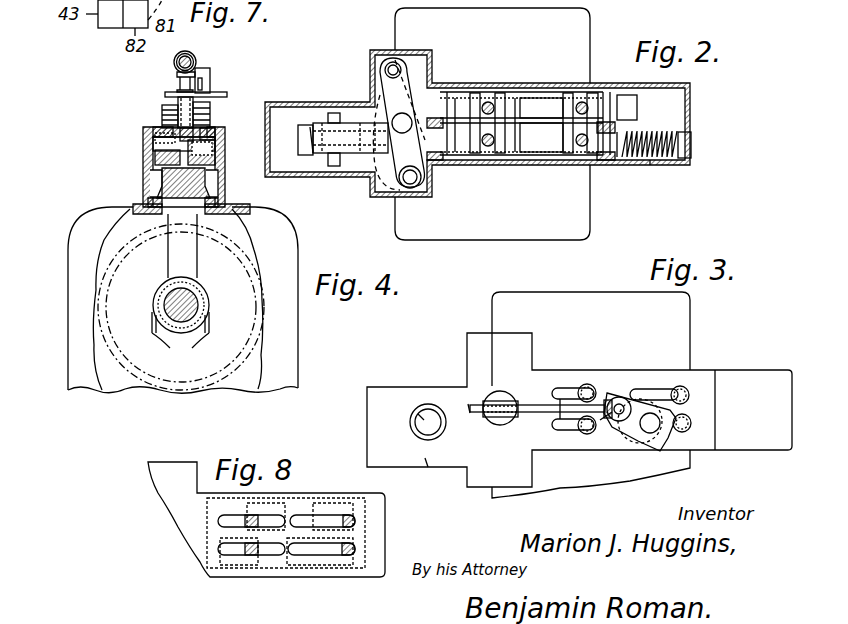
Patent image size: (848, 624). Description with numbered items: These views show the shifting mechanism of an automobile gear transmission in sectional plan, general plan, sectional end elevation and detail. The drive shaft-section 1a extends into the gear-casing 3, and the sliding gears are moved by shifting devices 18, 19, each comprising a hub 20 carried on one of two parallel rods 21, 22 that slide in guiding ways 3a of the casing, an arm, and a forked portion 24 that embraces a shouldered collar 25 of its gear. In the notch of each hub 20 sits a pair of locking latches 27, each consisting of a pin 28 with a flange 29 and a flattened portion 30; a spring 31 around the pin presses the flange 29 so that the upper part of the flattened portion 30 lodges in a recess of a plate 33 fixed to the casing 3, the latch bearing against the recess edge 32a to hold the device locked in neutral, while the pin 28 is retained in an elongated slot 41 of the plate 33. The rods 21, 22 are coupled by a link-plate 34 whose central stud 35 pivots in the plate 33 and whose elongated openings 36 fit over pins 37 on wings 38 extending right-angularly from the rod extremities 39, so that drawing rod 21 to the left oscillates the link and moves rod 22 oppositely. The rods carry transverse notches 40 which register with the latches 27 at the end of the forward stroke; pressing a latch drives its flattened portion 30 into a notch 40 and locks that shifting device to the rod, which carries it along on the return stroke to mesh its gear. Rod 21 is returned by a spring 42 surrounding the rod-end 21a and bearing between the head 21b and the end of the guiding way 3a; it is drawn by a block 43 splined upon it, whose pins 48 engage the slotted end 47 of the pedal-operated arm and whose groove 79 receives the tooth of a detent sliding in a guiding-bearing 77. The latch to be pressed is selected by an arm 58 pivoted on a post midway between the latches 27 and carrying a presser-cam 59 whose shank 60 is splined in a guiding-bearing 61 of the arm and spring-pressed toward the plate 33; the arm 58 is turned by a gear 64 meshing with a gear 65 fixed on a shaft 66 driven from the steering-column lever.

In FIG. 4, the shaft-section 1a is at (196, 305).
In FIG. 4, the gear-casing 3 is at (183, 300).
In FIG. 2, the gear-casing 3 is at (440, 166).
In FIG. 3, the gear-casing 3 is at (579, 410).
In FIG. 2, the guiding ways 3a is at (608, 160).
In FIG. 2, the shifting device 18 is at (472, 152).
In FIG. 4, the shifting device 19 is at (182, 258).
In FIG. 2, the shifting device 19 is at (562, 152).
In FIG. 4, the hub 20 is at (190, 190).
In FIG. 4, the rod 21 is at (215, 166).
In FIG. 2, the rod 21 is at (541, 137).
In FIG. 2, the rod-end 21a is at (640, 135).
In FIG. 2, the head 21b is at (692, 140).
In FIG. 4, the rod 22 is at (143, 160).
In FIG. 2, the rod 22 is at (541, 108).
In FIG. 4, the forked portions 24 is at (180, 341).
In FIG. 4, the shouldered collars 25 is at (155, 306).
In FIG. 4, the locking latches 27 is at (172, 130).
In FIG. 2, the locking latches 27 is at (488, 146).
In FIG. 3, the locking latches 27 is at (584, 385).
In FIG. 8, the locking latches 27 is at (355, 560).
In FIG. 4, the pin 28 is at (198, 146).
In FIG. 2, the pin 28 is at (585, 104).
In FIG. 8, the pin 28 is at (355, 521).
In FIG. 4, the flange 29 is at (196, 123).
In FIG. 3, the flange 29 is at (608, 428).
In FIG. 2, the flattened portion 30 is at (490, 100).
In FIG. 4, the spring 31 is at (196, 132).
In FIG. 8, the edge 32a is at (318, 510).
In FIG. 4, the plate 33 is at (160, 134).
In FIG. 3, the plate 33 is at (540, 395).
In FIG. 8, the plate 33 is at (178, 510).
In FIG. 2, the link-plate 34 is at (402, 122).
In FIG. 2, the stud 35 is at (410, 118).
In FIG. 2, the elongated openings 36 is at (412, 70).
In FIG. 2, the pins 37 is at (388, 62).
In FIG. 2, the wings 38 is at (400, 80).
In FIG. 2, the extremities 39 is at (378, 82).
In FIG. 2, the transverse notches 40 is at (515, 156).
In FIG. 3, the elongated slot 41 is at (650, 398).
In FIG. 8, the elongated slot 41 is at (272, 555).
In FIG. 2, the spring 42 is at (655, 166).
In FIG. 2, the block 43 is at (316, 158).
In FIG. 3, the slotted end 47 is at (428, 467).
In FIG. 2, the pins 48 is at (330, 115).
In FIG. 4, the arm 58 is at (207, 93).
In FIG. 3, the arm 58 is at (635, 441).
In FIG. 4, the presser-cam 59 is at (211, 112).
In FIG. 3, the presser-cam 59 is at (655, 433).
In FIG. 4, the shank 60 is at (196, 98).
In FIG. 4, the guiding-bearing 61 is at (211, 76).
In FIG. 4, the gear 64 is at (208, 70).
In FIG. 3, the gear 64 is at (622, 397).
In FIG. 4, the gear 65 is at (196, 58).
In FIG. 3, the gear 65 is at (607, 400).
In FIG. 3, the shaft 66 is at (535, 412).
In FIG. 3, the guiding-bearing 77 is at (416, 414).
In FIG. 2, the groove 79 is at (342, 123).